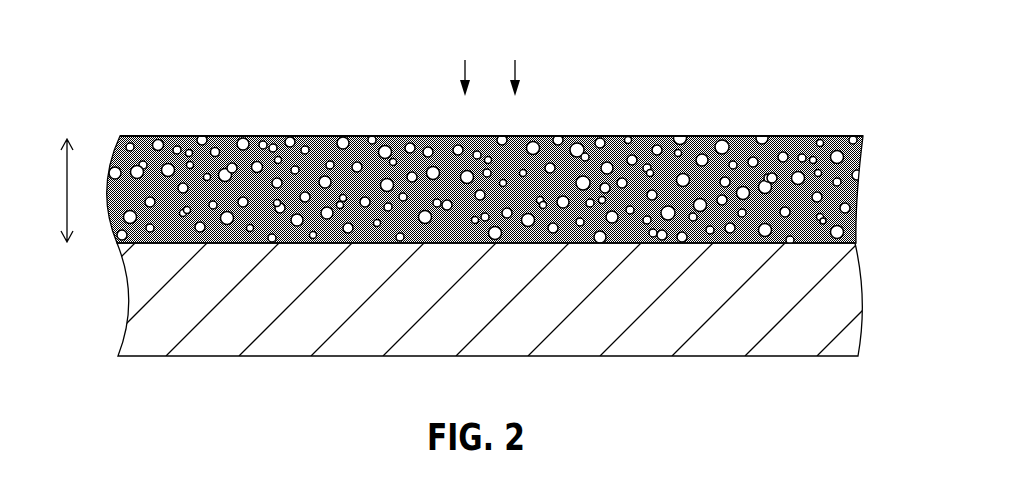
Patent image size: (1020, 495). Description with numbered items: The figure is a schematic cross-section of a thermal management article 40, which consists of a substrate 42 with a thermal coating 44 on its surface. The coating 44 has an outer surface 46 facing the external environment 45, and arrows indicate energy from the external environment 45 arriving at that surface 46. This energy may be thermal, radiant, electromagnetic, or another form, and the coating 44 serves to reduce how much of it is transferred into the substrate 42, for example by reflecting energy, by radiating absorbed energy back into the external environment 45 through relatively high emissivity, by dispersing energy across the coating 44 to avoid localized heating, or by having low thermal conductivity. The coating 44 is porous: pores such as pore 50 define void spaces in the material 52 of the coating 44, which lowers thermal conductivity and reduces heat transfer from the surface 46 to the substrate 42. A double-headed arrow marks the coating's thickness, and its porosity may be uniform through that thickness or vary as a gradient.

The thermal management article 40 is at (834, 42).
The substrate 42 is at (137, 297).
The thermal coating 44 is at (868, 137).
The external environment 45 is at (505, 68).
The surface 46 is at (356, 137).
The pore 50 is at (258, 161).
The material 52 is at (320, 157).